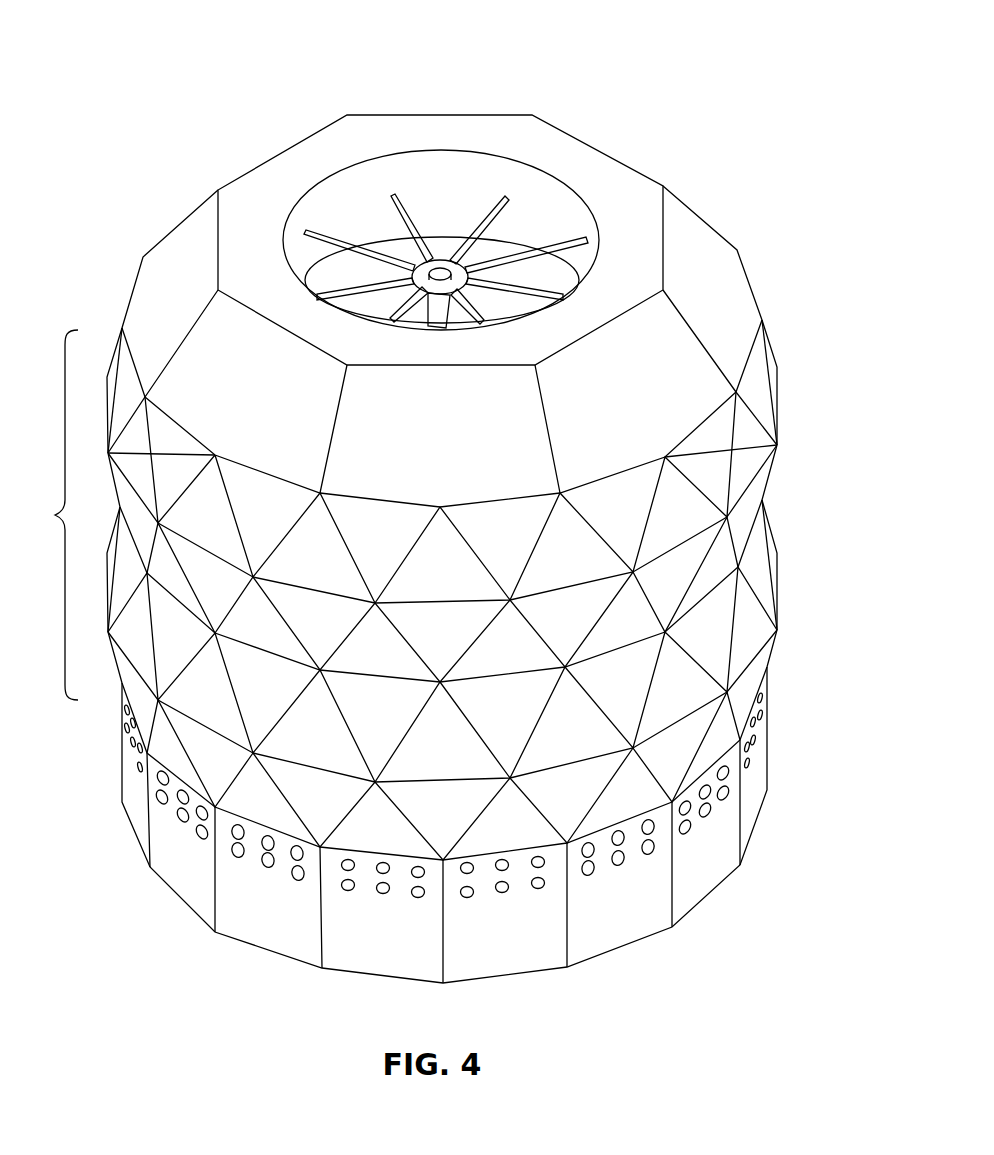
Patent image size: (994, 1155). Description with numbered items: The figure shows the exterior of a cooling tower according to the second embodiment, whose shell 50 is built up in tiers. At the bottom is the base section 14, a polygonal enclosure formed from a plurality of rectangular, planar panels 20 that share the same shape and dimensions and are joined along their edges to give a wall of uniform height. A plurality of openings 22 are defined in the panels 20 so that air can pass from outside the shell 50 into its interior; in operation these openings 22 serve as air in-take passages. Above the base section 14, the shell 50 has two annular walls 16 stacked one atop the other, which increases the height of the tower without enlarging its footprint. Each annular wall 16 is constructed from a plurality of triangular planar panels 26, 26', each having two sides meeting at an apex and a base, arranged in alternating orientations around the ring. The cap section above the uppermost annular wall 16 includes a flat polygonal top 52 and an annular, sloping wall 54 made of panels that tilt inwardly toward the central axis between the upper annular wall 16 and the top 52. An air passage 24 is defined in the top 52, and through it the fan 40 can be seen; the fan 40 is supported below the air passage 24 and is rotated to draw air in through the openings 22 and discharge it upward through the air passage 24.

The base section 14 is at (767, 737).
The annular wall 16 is at (777, 400).
The panel 20 is at (168, 877).
The opening 22 is at (730, 792).
The air passage 24 is at (548, 172).
The triangular panel 26 is at (442, 587).
The triangular panel 26' is at (443, 688).
The fan 40 is at (400, 192).
The shell 50 is at (44, 515).
The flat polygonal top 52 is at (617, 170).
The sloping wall 54 is at (155, 277).